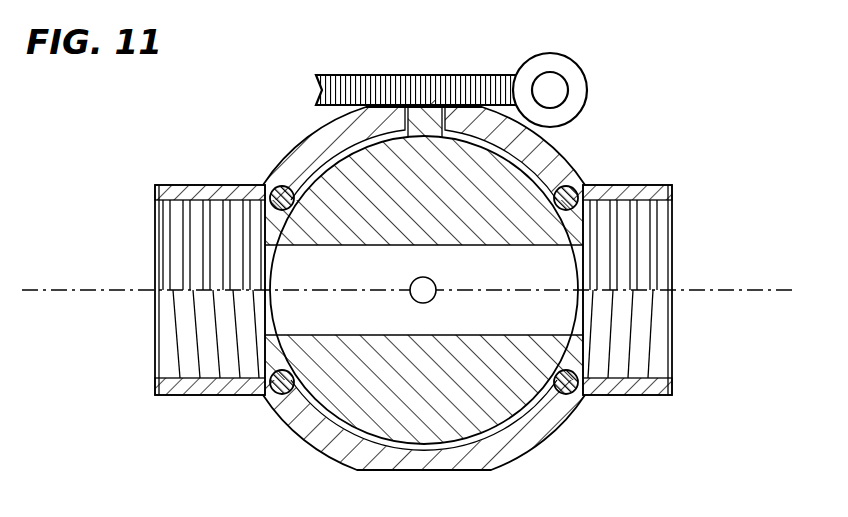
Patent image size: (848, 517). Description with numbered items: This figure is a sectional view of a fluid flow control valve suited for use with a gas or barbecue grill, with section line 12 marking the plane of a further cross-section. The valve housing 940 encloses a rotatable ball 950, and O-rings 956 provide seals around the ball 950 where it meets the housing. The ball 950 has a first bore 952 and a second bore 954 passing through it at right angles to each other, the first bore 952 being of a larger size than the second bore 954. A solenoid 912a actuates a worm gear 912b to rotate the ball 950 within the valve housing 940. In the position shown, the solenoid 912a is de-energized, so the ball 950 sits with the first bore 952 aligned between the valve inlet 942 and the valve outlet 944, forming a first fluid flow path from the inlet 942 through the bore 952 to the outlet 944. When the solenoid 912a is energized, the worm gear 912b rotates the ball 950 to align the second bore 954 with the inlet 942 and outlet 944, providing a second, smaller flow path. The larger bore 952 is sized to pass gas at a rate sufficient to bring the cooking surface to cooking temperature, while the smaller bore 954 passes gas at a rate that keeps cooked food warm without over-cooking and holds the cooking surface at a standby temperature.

The section line 12- 12 is at (32, 283).
The solenoid 912a is at (578, 117).
The worm gear 912b is at (508, 76).
The valve housing 940 is at (224, 185).
The valve inlet 942 is at (163, 377).
The valve outlet 944 is at (641, 380).
The ball 950 is at (583, 232).
The first bore 952 is at (490, 334).
The second bore 954 is at (432, 300).
The O-rings 956 is at (272, 206).